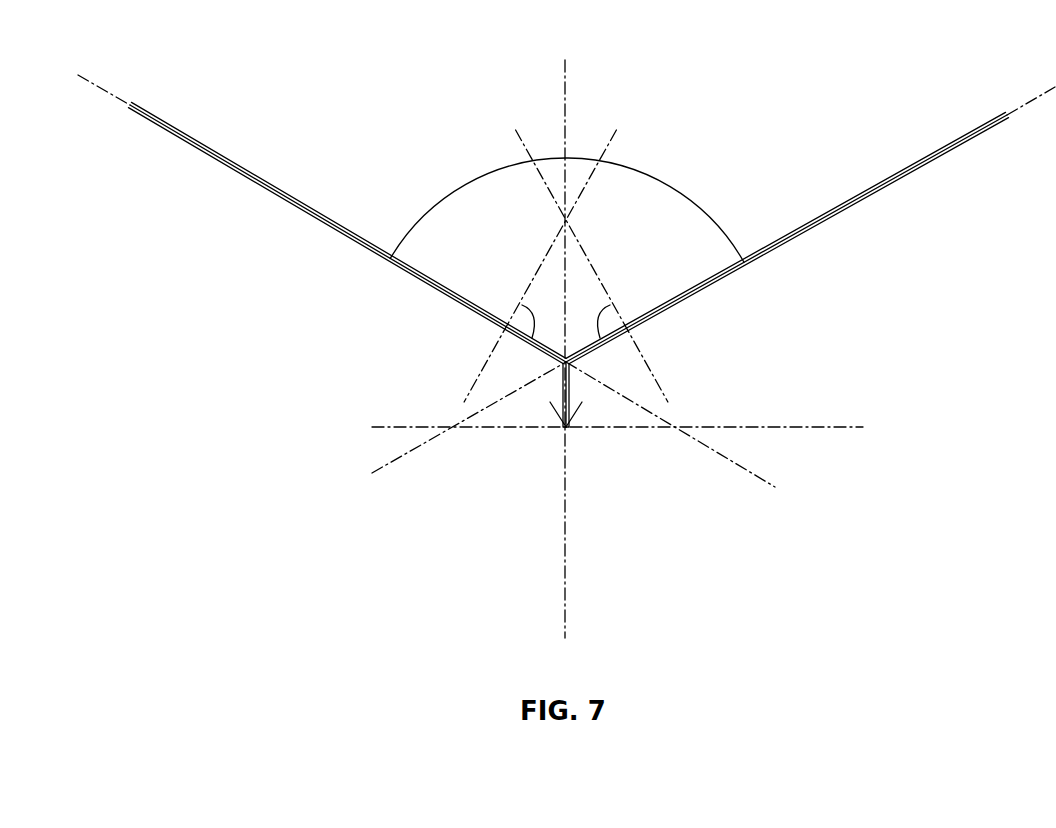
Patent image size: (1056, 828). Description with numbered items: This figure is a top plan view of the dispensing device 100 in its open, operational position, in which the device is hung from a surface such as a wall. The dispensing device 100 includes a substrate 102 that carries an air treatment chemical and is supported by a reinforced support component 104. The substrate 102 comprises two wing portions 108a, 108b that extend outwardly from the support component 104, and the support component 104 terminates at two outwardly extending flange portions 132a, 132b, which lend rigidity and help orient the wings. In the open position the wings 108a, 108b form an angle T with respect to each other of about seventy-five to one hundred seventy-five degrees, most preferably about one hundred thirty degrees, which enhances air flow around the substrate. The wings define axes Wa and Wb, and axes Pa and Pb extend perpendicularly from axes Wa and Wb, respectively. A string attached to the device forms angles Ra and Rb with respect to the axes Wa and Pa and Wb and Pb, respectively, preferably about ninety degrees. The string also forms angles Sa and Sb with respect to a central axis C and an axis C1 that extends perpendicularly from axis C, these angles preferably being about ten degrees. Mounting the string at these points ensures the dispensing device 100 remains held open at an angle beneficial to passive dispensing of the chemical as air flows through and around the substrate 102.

The dispensing device 100 is at (205, 46).
The substrate 102 is at (860, 190).
The reinforced support component 104 is at (918, 170).
The wing portion 108a is at (223, 167).
The wing portion 108b is at (804, 235).
The flange portion 132a is at (350, 240).
The flange portion 132b is at (695, 293).
The angle T is at (423, 213).
The axis Pa is at (612, 146).
The axis Pb is at (525, 143).
The angle Ra is at (525, 325).
The angle Rb is at (607, 325).
The angle Sa is at (553, 399).
The angle Sb is at (577, 399).
The axis Wa is at (727, 462).
The axis Wb is at (405, 457).
The axis C is at (565, 597).
The axis C1 is at (830, 428).